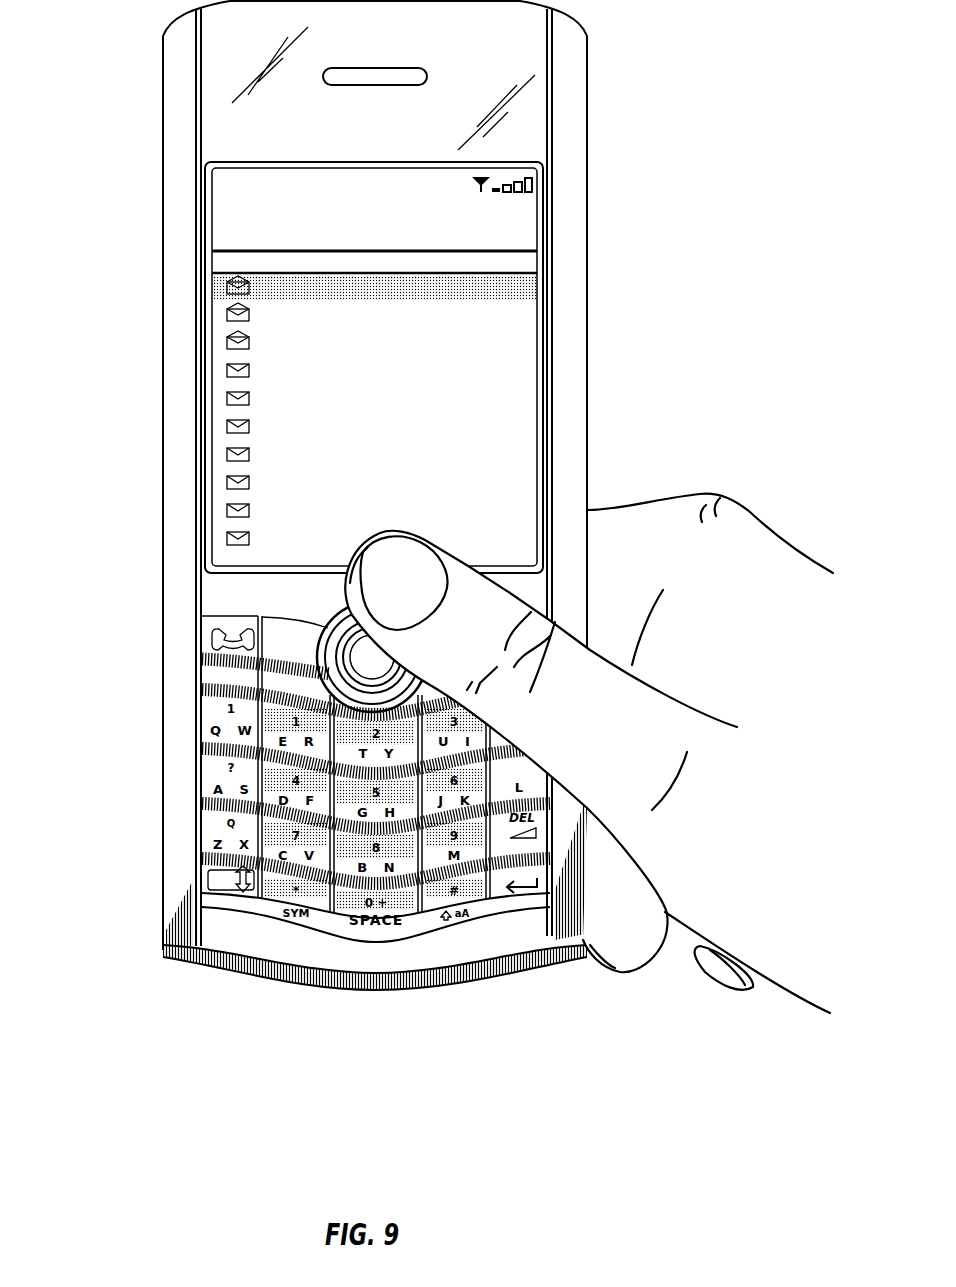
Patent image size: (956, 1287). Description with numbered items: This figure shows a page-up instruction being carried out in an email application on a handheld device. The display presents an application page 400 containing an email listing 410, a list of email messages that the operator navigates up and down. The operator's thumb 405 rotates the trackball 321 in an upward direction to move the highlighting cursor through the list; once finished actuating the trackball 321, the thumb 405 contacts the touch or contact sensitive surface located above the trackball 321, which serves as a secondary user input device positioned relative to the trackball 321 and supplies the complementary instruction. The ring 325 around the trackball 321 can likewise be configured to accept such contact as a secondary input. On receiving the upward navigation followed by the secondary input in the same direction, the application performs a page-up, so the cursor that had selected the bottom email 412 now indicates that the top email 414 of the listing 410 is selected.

The application page 400 is at (518, 330).
The operator's thumb 405 is at (477, 617).
The email listing 410 is at (141, 414).
The bottom email 412 is at (156, 616).
The top email 414 is at (240, 272).
The trackball 321 is at (374, 658).
The ring 325 is at (343, 632).